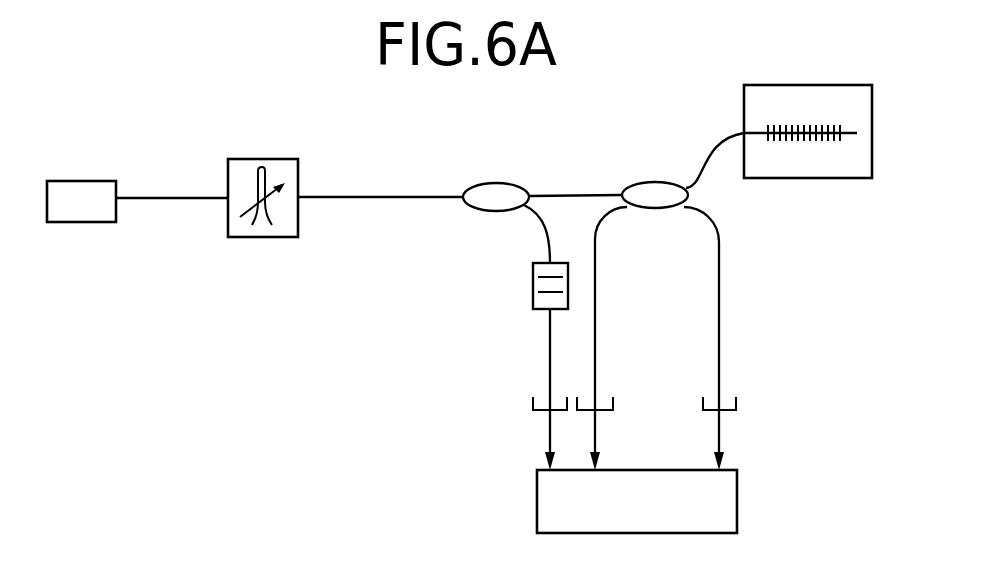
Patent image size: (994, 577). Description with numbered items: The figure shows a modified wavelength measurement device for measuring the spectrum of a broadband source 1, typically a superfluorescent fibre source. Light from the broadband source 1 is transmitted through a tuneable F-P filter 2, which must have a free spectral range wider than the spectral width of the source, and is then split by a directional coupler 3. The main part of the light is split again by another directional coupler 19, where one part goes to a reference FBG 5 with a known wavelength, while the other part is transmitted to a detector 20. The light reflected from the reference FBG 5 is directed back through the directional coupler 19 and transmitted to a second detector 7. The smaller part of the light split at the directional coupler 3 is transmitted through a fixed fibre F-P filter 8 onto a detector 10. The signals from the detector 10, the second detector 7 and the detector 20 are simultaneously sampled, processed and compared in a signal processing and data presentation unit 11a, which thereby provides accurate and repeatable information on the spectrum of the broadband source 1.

The broadband source 1 is at (81, 184).
The tuneable F-P filter 2 is at (263, 181).
The directional coupler 3 is at (496, 181).
The reference FBG 5 is at (779, 136).
The second detector 7 is at (608, 338).
The fixed fibre F-P filter 8 is at (533, 257).
The detector 10 is at (534, 389).
The signal processing and data presentation unit 11a is at (637, 501).
The directional coupler 19 is at (655, 174).
The detector 20 is at (727, 338).